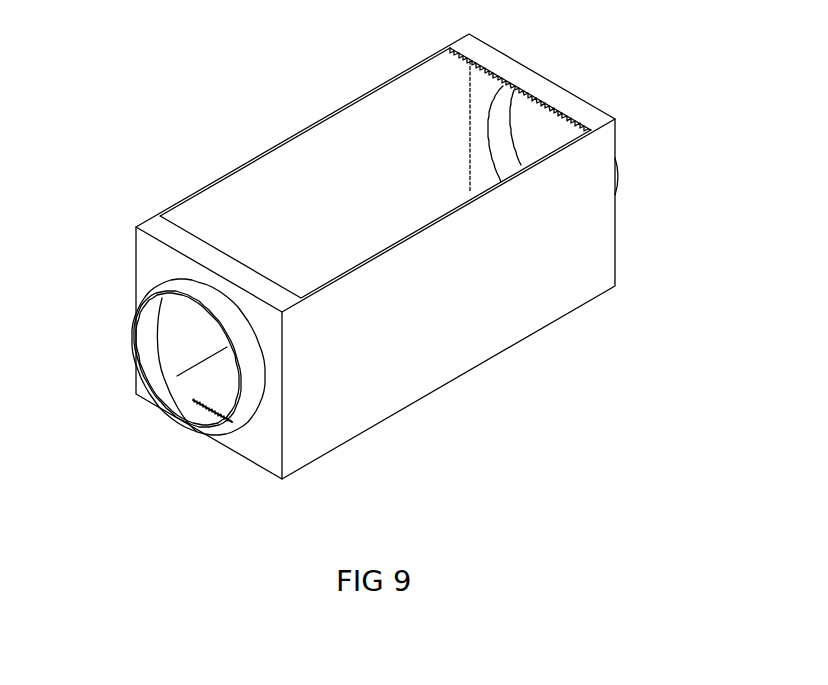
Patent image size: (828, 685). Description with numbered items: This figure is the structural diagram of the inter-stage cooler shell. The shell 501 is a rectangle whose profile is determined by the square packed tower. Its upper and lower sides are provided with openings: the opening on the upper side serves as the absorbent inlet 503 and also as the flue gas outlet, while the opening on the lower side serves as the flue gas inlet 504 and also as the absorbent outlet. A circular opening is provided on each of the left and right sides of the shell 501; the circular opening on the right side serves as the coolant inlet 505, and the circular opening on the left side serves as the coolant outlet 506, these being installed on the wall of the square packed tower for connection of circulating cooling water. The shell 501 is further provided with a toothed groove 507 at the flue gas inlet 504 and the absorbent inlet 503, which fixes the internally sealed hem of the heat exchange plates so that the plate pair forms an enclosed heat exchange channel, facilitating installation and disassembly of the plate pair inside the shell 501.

The shell 501 is at (430, 365).
The absorbent inlet 503 is at (268, 175).
The flue gas inlet 504 is at (218, 390).
The coolant inlet 505 is at (534, 135).
The coolant outlet 506 is at (157, 368).
The toothed groove 507 is at (468, 60).